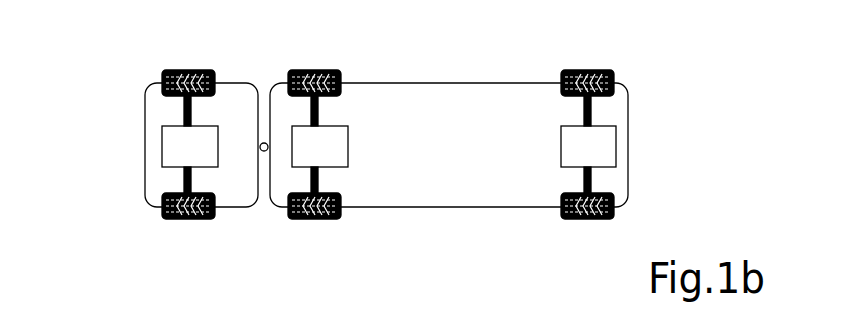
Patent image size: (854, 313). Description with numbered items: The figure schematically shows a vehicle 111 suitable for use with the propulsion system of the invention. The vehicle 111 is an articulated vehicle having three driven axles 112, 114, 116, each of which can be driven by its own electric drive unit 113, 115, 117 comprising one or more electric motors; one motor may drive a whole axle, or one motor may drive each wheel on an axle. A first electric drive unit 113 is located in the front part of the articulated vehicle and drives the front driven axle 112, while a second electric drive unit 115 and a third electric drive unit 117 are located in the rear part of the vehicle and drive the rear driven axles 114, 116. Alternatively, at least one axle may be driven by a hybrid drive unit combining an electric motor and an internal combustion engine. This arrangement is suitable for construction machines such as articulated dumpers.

The vehicle 111 is at (483, 70).
The driven axle 112 is at (183, 181).
The first electric drive unit 113 is at (163, 142).
The driven axle 114 is at (588, 180).
The second electric drive unit 115 is at (612, 150).
The driven axle 116 is at (318, 178).
The third electric drive unit 117 is at (288, 148).